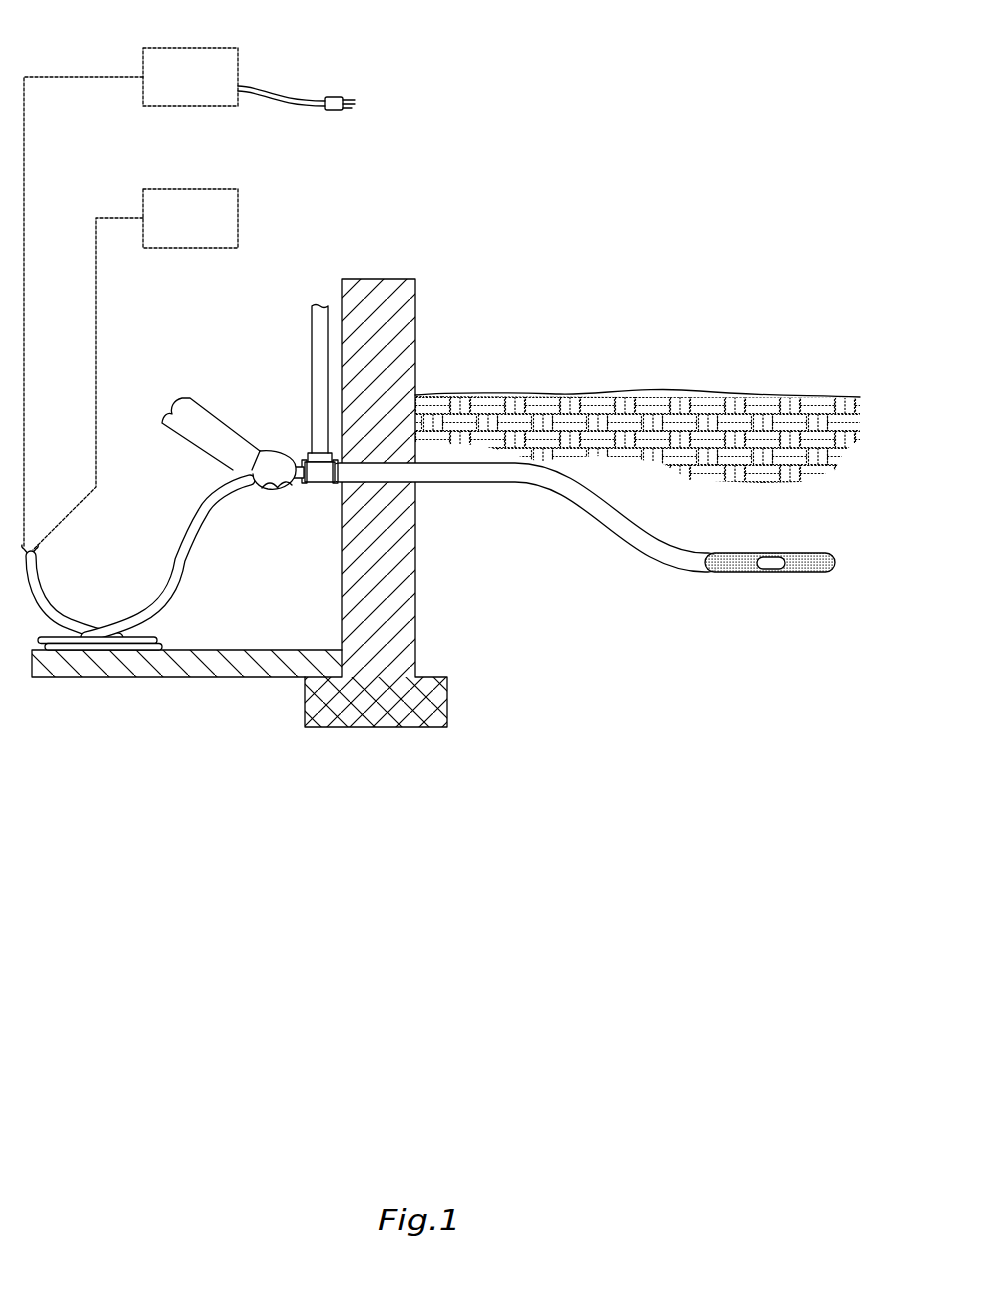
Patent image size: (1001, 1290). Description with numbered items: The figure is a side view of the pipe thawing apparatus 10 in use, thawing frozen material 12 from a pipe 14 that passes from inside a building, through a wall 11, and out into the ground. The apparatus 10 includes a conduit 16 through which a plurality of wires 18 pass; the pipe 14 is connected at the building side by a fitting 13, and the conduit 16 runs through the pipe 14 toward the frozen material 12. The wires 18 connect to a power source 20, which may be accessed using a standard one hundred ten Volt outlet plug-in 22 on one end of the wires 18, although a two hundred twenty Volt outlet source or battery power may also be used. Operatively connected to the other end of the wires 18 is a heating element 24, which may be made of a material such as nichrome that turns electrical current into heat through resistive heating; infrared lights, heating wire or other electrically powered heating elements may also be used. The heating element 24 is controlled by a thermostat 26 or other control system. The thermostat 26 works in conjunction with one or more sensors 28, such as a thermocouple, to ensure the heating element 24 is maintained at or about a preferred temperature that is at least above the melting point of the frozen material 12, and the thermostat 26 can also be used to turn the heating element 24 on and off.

The pipe thawing apparatus 10 is at (650, 494).
The wall 11 is at (405, 590).
The frozen material 12 is at (756, 565).
The pipe fitting 13 is at (318, 480).
The pipe 14 is at (451, 478).
The conduit 16 is at (732, 567).
The wires 18 is at (740, 553).
The power source 20 is at (163, 48).
The outlet plug-in 22 is at (298, 102).
The heating element 24 is at (793, 542).
The thermostat 26 is at (163, 189).
The sensors 28 is at (182, 558).